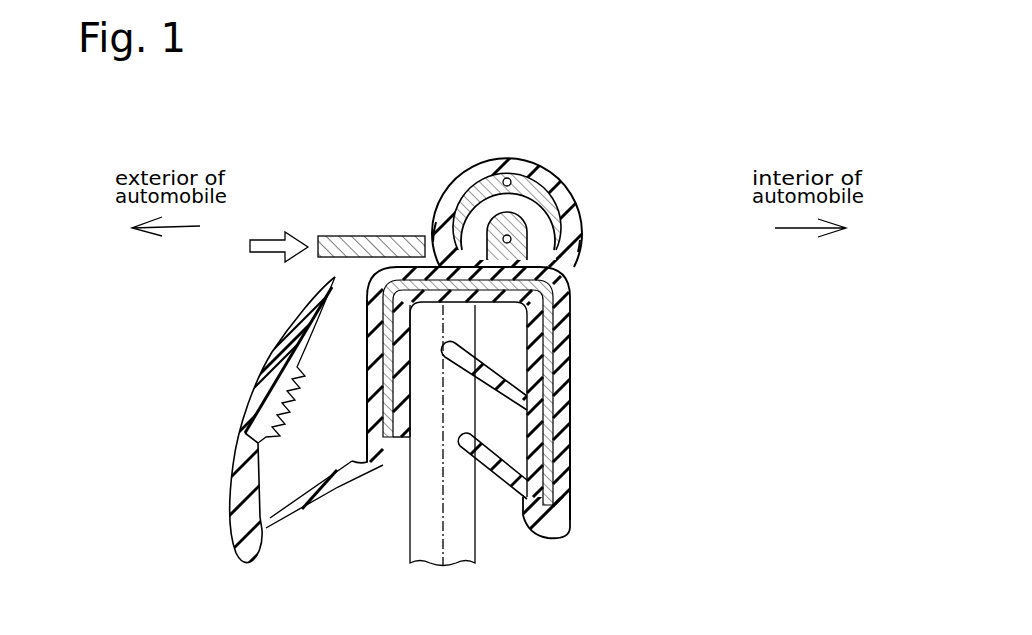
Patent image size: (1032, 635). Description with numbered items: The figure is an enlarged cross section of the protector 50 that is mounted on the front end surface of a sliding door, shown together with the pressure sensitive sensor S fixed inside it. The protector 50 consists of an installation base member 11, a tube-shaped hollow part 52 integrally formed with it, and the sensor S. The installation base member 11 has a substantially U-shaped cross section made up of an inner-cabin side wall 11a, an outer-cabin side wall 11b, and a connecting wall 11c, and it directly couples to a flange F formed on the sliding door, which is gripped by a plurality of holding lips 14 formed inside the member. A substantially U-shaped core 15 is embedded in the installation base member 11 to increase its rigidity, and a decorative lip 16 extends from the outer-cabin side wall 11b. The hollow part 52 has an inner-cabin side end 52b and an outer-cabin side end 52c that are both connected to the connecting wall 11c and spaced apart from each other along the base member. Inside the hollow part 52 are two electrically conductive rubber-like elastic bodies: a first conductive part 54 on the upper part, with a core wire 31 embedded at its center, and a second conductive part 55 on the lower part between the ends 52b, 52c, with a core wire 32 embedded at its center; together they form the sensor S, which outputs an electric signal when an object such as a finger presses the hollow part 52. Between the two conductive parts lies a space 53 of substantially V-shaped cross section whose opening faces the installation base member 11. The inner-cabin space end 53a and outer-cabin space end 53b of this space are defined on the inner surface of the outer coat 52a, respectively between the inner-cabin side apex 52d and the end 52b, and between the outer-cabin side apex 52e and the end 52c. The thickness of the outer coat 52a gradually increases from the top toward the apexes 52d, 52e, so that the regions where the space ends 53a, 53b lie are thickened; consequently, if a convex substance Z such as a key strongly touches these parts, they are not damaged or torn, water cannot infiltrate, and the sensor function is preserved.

The protector 50 is at (442, 209).
The hollow part 52 is at (500, 160).
The core wire 31 is at (530, 213).
The space 53 is at (565, 192).
The second conductive part 55 is at (512, 240).
The core wire 32 is at (545, 252).
The outer coat 52a is at (523, 182).
The sensor S is at (480, 190).
The first conductive part 54 is at (478, 186).
The outer-cabin side apex 52e is at (436, 243).
The inner-cabin side apex 52d is at (560, 240).
The inner-cabin space end 53a is at (556, 270).
The inner-cabin side end 52b is at (542, 275).
The outer-cabin side end 52c is at (432, 264).
The outer-cabin space end 53b is at (397, 272).
The installation base member 11 is at (350, 426).
The inner-cabin side wall 11a is at (573, 430).
The outer-cabin side wall 11b is at (368, 362).
The connecting wall 11c is at (488, 300).
The core 15 is at (387, 330).
The holding lip 14 is at (457, 378).
The decorative lip 16 is at (240, 408).
The flange F is at (410, 530).
The convex substance Z is at (337, 218).